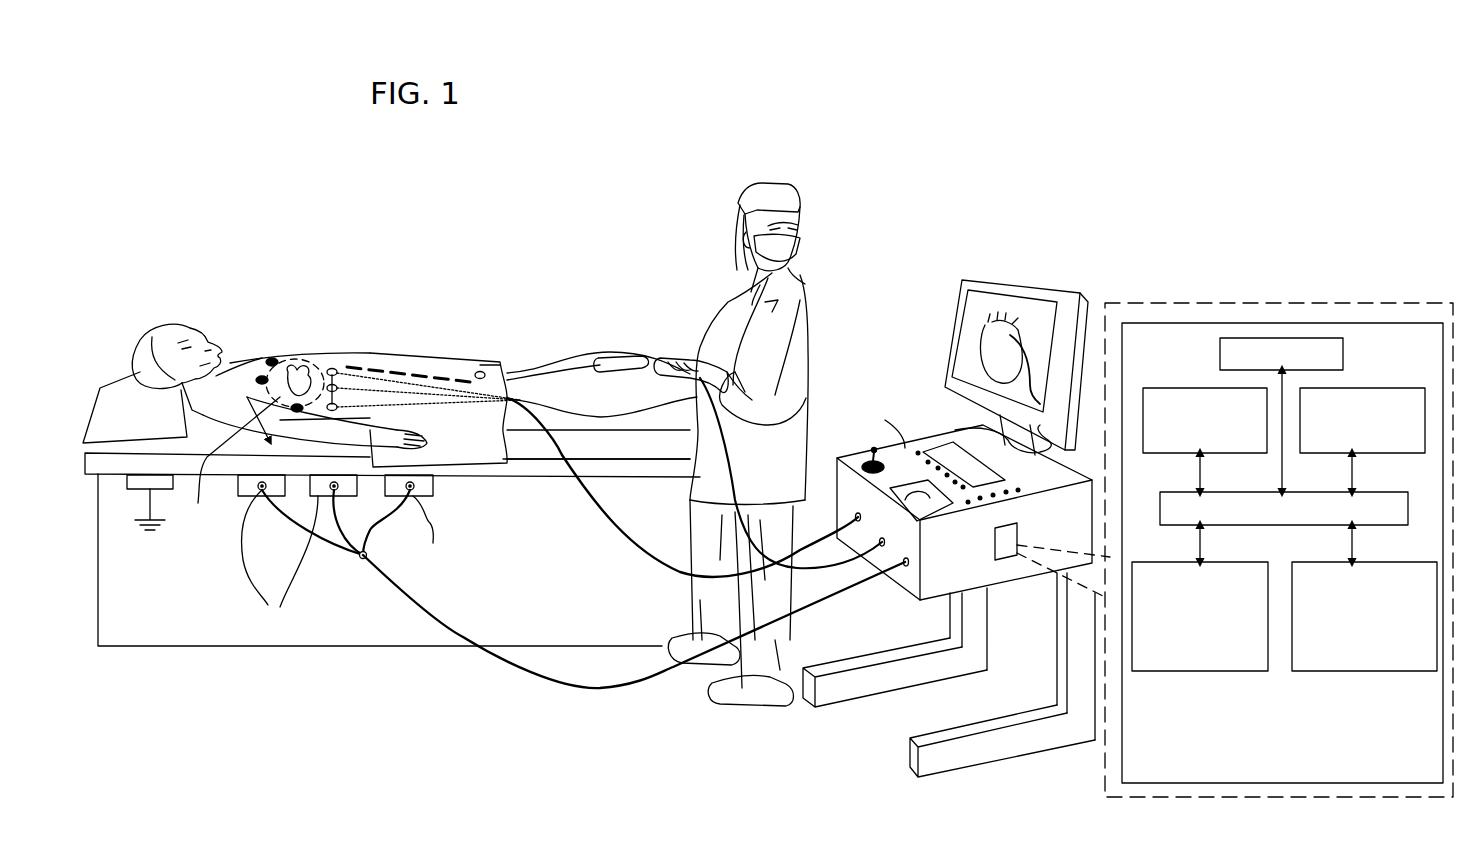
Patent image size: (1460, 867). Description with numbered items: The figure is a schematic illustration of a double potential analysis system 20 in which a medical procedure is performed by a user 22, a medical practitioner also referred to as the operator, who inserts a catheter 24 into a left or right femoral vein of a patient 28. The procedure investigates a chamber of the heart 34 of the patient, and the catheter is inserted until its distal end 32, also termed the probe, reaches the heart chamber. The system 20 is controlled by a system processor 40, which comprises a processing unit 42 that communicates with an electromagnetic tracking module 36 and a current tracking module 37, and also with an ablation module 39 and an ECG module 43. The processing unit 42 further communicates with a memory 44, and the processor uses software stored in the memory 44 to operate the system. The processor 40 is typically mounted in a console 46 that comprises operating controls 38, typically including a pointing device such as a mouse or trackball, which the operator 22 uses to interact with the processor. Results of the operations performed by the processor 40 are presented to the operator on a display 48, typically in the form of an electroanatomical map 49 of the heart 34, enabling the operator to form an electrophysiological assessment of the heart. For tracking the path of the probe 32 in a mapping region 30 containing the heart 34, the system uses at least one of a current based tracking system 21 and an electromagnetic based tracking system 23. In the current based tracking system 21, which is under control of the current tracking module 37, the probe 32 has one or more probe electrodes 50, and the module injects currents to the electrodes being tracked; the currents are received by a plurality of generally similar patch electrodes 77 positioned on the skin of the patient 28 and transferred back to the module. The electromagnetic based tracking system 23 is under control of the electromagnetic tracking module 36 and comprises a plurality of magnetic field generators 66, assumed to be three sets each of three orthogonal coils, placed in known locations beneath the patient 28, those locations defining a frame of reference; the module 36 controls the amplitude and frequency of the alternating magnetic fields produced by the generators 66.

The double potential analysis system 20 is at (925, 225).
The current based tracking system 21 is at (265, 693).
The user 22 is at (758, 183).
The electromagnetic based tracking system 23 is at (320, 693).
The catheter 24 is at (572, 352).
The patient 28 is at (581, 428).
The mapping region 30 is at (232, 463).
The distal end of the catheter 32 is at (290, 197).
The heart 34 is at (305, 382).
The electromagnetic tracking module 36 is at (1205, 672).
The current tracking module 37 is at (1350, 672).
The operating controls 38 is at (860, 350).
The ablation module 39 is at (1183, 388).
The system processor 40 is at (1255, 514).
The processing unit 42 is at (1177, 492).
The ECG module 43 is at (1370, 388).
The memory 44 is at (1280, 338).
The console 46 is at (890, 443).
The display 48 is at (986, 343).
The electroanatomical map 49 is at (998, 330).
The probe electrodes 50 is at (218, 197).
The magnetic field generators 66 is at (573, 589).
The patch electrodes 77 is at (263, 378).